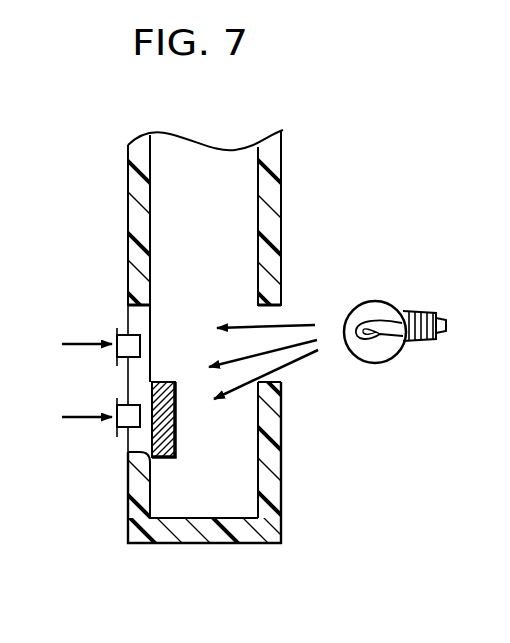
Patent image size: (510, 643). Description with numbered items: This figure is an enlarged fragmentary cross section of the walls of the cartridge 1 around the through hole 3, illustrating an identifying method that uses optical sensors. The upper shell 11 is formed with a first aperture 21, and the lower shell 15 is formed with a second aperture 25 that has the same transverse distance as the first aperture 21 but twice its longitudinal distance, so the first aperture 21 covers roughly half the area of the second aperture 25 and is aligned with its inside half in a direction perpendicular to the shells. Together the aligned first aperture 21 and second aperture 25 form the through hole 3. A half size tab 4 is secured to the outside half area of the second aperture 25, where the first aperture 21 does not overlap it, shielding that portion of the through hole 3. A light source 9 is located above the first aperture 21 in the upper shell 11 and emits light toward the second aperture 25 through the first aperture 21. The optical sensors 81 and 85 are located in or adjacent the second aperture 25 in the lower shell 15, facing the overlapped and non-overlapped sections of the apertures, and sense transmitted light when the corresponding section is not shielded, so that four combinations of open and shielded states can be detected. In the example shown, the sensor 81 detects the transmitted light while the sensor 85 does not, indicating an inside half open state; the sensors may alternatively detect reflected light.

The cartridge 1 is at (295, 182).
The upper shell 11 is at (278, 228).
The lower shell 15 is at (128, 216).
The first aperture 21 is at (283, 379).
The second aperture 25 is at (128, 316).
The through hole 3 is at (235, 315).
The half size tab 4 is at (163, 457).
The optical sensor 81 is at (117, 350).
The optical sensor 85 is at (117, 423).
The light source 9 is at (385, 300).